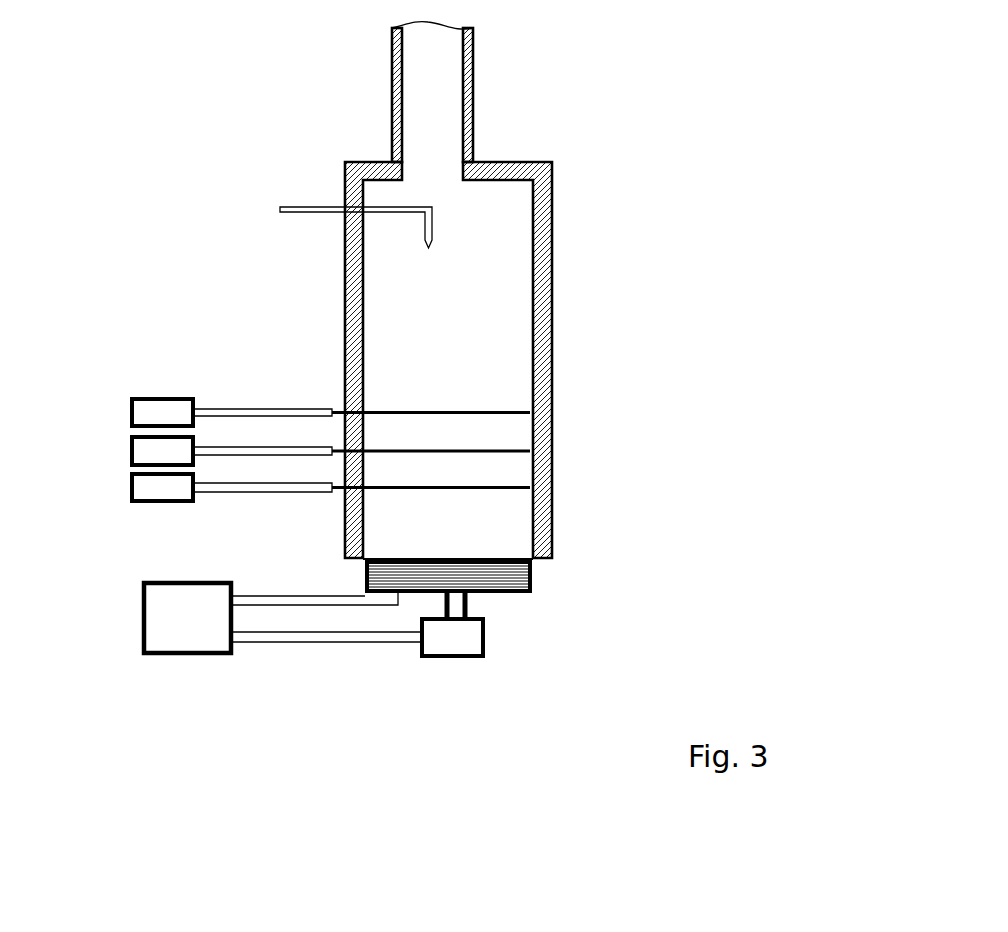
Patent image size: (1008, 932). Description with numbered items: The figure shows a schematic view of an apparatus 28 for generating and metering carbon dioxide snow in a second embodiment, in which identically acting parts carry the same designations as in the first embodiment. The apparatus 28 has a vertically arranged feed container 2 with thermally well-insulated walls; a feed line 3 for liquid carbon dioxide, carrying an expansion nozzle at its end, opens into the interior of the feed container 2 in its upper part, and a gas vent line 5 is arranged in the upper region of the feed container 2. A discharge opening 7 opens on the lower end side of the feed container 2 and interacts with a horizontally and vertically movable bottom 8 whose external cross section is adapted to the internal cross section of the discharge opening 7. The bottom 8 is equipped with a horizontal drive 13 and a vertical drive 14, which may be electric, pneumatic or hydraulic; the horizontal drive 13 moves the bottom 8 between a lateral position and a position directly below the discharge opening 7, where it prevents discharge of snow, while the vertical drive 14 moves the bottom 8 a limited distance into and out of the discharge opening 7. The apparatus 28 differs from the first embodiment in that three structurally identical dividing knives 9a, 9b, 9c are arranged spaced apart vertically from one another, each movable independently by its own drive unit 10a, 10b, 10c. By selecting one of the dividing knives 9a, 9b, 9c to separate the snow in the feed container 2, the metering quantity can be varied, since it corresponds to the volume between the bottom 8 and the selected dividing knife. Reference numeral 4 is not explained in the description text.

The apparatus 28 is at (236, 72).
The feed container 2 is at (562, 278).
The gas vent line 5 is at (473, 48).
The feed line 3 is at (310, 212).
The dividing knife 9a is at (498, 408).
The dividing knife 9b is at (498, 448).
The dividing knife 9c is at (498, 485).
The drive unit 10a is at (140, 411).
The drive unit 10b is at (140, 452).
The drive unit 10c is at (140, 488).
The discharge opening 7 is at (392, 557).
The heater 4 is at (543, 572).
The bottom 8 is at (508, 580).
The horizontal drive 13 is at (282, 618).
The vertical drive 14 is at (452, 624).